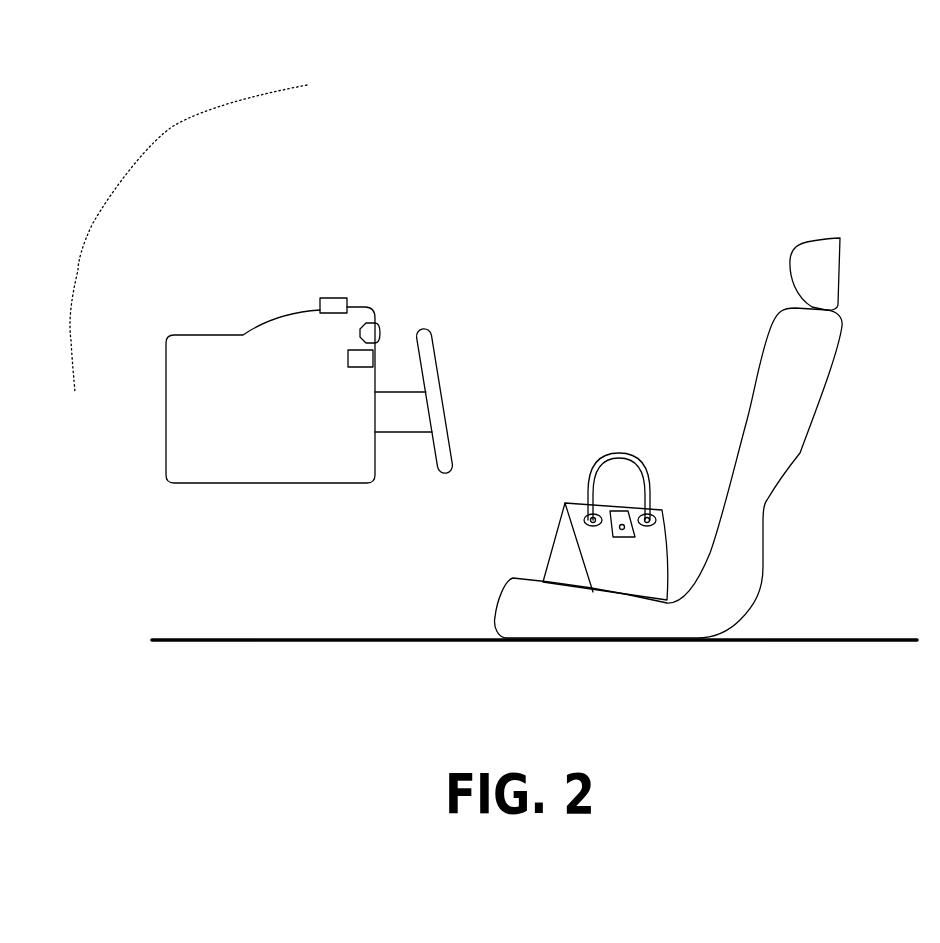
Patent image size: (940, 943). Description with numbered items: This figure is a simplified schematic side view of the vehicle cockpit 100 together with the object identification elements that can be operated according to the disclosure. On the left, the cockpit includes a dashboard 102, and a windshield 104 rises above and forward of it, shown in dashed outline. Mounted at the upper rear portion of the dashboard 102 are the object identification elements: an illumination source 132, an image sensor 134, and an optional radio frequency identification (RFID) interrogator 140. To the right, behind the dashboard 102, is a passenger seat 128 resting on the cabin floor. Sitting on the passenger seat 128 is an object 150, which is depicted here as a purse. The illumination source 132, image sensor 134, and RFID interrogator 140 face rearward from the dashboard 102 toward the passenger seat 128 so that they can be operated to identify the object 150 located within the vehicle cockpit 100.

The vehicle cockpit 100 is at (933, 52).
The dashboard 102 is at (273, 465).
The windshield 104 is at (175, 125).
The passenger seat 128 is at (767, 510).
The illumination source 132 is at (357, 355).
The image sensor 134 is at (378, 323).
The radio frequency identification (RFID) interrogator 140 is at (332, 298).
The object 150 is at (628, 450).